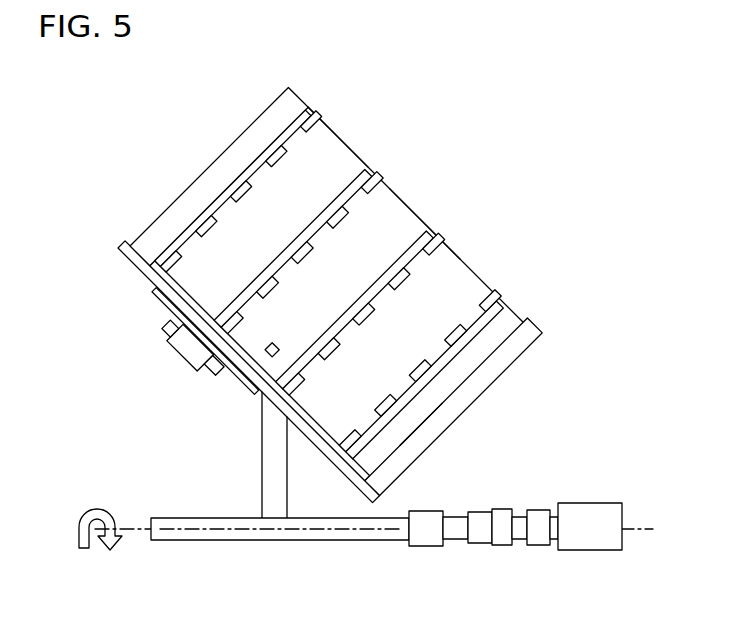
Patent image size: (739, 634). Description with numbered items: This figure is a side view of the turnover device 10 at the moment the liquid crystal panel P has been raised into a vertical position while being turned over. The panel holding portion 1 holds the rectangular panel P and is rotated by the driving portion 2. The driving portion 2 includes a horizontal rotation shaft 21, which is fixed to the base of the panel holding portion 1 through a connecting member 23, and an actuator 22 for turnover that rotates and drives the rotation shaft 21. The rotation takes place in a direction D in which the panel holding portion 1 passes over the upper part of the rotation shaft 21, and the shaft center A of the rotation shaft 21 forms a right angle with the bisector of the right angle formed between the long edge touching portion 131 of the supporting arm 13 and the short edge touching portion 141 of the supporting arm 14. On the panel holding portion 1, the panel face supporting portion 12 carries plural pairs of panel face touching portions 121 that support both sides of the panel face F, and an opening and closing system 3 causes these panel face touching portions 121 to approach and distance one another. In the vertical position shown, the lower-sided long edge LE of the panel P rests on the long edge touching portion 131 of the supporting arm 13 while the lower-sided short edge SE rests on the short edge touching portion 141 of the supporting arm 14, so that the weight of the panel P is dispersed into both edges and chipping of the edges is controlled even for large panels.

The panel holding portion 1 is at (150, 323).
The driving portion 2 is at (162, 492).
The opening and closing system 3 is at (203, 378).
The turnover device 10 is at (181, 128).
The panel face supporting portion 12 is at (270, 131).
The panel face touching portions 121 is at (303, 130).
The supporting arm 13 is at (155, 242).
The long edge touching portion 131 is at (174, 228).
The supporting arm 14 is at (540, 328).
The short edge touching portion 141 is at (516, 340).
The rotation shaft 21 is at (205, 527).
The actuator 22 is at (590, 502).
The connecting member 23 is at (287, 476).
The liquid crystal panel P is at (345, 142).
The panel face F is at (405, 228).
The long edge LE is at (274, 346).
The short edge SE is at (460, 414).
The shaft center A is at (236, 527).
The direction D is at (100, 513).